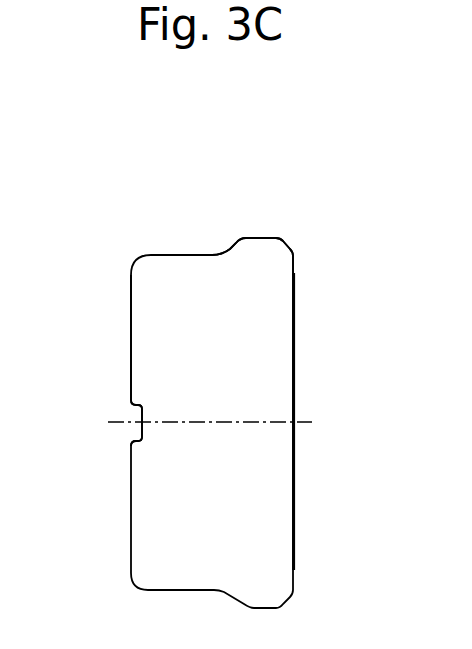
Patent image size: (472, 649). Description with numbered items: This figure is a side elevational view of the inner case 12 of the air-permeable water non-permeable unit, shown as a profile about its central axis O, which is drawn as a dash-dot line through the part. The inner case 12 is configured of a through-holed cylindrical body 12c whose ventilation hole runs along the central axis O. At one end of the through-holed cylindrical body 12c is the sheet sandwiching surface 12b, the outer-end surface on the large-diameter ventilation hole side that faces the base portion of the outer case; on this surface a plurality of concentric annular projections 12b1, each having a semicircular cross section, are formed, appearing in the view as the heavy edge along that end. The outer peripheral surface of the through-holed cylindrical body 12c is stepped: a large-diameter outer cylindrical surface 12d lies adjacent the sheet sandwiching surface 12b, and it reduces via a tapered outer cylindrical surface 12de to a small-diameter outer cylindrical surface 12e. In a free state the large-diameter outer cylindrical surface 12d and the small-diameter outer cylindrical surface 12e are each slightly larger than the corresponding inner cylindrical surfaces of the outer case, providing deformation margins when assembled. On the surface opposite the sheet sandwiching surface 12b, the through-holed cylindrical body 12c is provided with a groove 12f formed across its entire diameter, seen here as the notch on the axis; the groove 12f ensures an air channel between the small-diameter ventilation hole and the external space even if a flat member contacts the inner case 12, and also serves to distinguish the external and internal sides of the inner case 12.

The inner case 12 is at (80, 240).
The small-diameter outer cylindrical surface 12e is at (177, 250).
The tapered outer cylindrical surface 12de is at (232, 247).
The large-diameter outer cylindrical surface 12d is at (262, 237).
The sheet sandwiching surface 12b is at (296, 264).
The concentric annular projections 12b1 is at (296, 345).
The through-holed cylindrical body 12c is at (132, 338).
The groove 12f is at (138, 414).
The central axis O is at (197, 423).